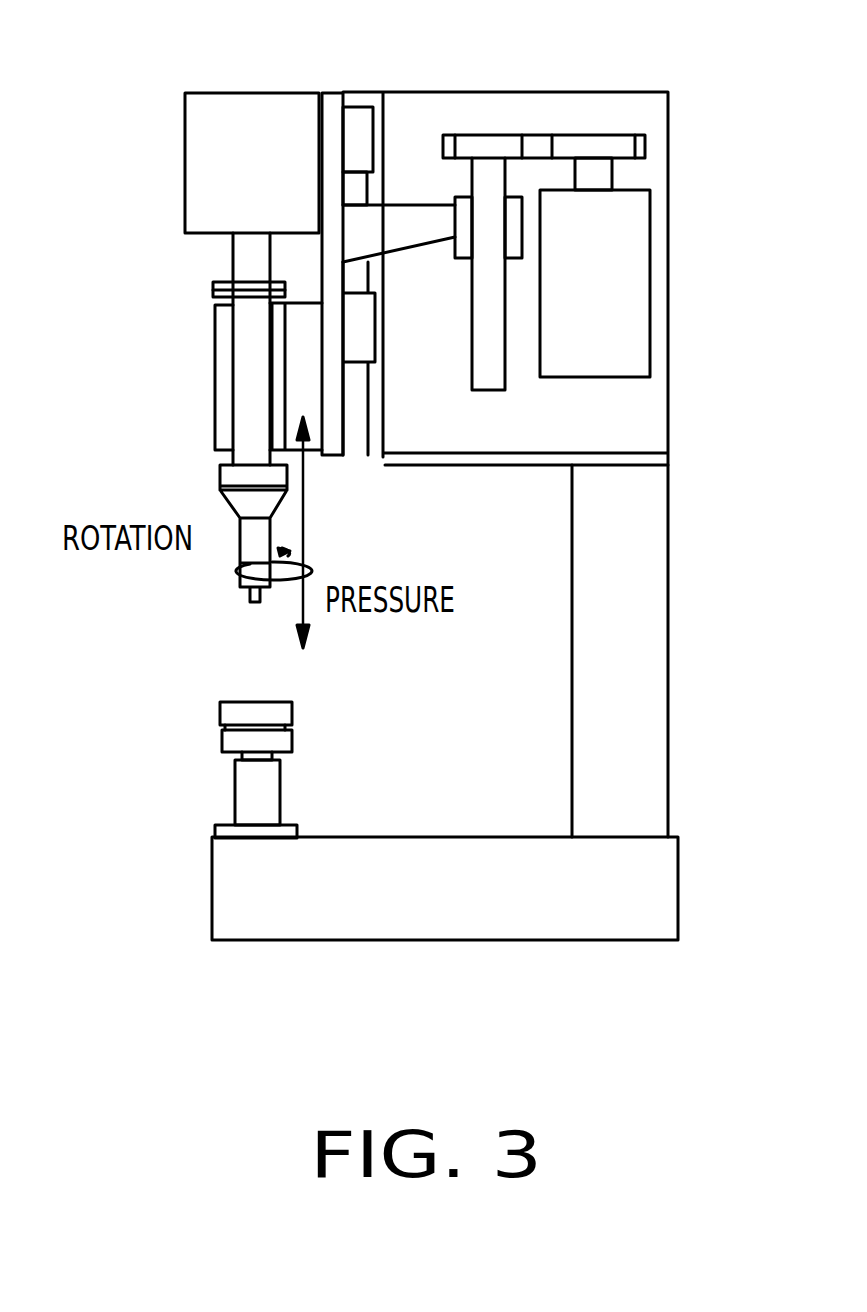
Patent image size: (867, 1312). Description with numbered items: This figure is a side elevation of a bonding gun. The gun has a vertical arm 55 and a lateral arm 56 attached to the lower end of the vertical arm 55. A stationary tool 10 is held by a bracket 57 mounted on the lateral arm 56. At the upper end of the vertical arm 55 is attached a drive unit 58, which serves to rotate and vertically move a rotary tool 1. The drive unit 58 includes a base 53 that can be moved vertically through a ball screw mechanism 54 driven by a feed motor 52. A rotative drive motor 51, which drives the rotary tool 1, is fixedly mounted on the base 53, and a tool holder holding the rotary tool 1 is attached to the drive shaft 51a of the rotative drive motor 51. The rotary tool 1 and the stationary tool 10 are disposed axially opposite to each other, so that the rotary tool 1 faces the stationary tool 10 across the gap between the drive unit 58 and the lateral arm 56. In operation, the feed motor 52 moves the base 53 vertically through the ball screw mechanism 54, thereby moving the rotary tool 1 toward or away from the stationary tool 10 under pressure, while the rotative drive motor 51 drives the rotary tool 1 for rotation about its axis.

The rotary tool 1 is at (240, 577).
The stationary tool 10 is at (292, 718).
The rotative drive motor 51 is at (185, 167).
The drive shaft 51a is at (242, 258).
The feed motor 52 is at (650, 290).
The base 53 is at (353, 117).
The ball screw mechanism 54 is at (487, 383).
The vertical arm 55 is at (635, 628).
The lateral arm 56 is at (478, 930).
The bracket 57 is at (235, 788).
The drive unit 58 is at (652, 412).